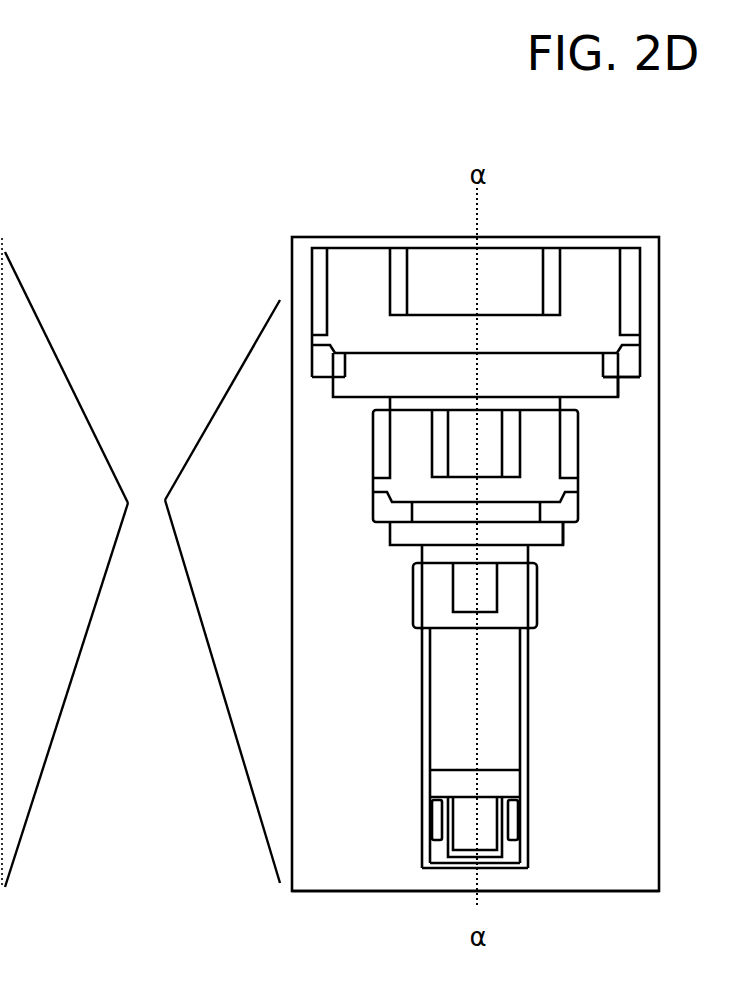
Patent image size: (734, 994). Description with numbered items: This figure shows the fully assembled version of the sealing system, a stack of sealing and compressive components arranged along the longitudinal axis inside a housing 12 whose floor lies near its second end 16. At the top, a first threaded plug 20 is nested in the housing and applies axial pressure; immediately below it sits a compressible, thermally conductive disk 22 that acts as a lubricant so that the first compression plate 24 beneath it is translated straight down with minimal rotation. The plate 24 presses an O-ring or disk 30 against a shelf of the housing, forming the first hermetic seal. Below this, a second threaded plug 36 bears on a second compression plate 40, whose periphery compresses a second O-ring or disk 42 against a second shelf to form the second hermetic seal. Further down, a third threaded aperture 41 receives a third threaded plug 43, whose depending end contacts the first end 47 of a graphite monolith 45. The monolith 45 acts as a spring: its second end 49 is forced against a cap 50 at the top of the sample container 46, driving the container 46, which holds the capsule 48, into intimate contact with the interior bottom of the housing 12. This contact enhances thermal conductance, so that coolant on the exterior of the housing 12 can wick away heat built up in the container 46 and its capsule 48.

The housing 12 is at (142, 569).
The second end 16 is at (363, 890).
The first threaded plug 20 is at (365, 268).
The disk 22 is at (392, 363).
The first compression plate 24 is at (600, 382).
The O-ring or disk 30 is at (0, 215).
The second threaded plug 36 is at (410, 425).
The second compression plate 40 is at (430, 530).
The third threaded aperture 41 is at (533, 580).
The second O-ring or disk 42 is at (563, 541).
The third threaded plug 43 is at (518, 608).
The graphite monolith 45 is at (447, 662).
The container 46 is at (442, 805).
The first end of the monolith 47 is at (503, 642).
The capsule 48 is at (483, 833).
The second end of the monolith 49 is at (510, 762).
The cap 50 is at (452, 790).